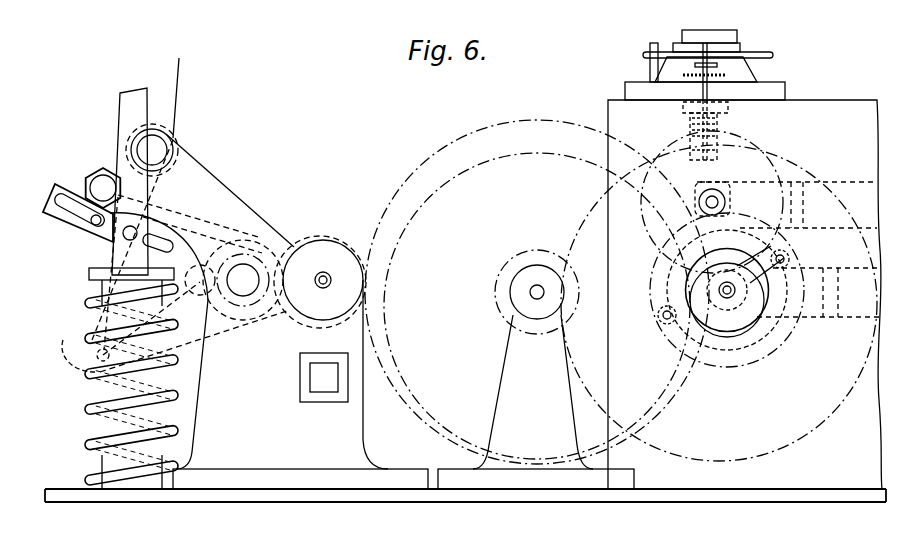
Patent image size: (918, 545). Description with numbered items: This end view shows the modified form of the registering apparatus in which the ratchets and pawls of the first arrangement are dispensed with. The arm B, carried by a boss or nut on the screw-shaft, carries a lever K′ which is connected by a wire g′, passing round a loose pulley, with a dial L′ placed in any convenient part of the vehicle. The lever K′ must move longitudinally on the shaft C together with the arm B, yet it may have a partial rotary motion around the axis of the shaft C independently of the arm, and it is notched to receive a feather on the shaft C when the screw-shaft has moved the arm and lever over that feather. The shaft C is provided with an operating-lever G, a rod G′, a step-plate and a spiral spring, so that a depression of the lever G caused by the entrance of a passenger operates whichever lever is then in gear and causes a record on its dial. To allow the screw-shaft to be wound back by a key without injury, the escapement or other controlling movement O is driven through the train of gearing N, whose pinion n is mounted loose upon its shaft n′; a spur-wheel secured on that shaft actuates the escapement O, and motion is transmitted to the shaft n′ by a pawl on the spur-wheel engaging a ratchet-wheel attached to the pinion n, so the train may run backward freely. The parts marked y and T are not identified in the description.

The shaft C is at (234, 280).
The arm B is at (66, 342).
The wire g′ is at (141, 199).
The rod G′ is at (139, 181).
The dial L′ is at (103, 188).
The operating-lever G is at (78, 216).
The lever K′ is at (131, 378).
The train of gearing N is at (537, 294).
The escapement or controlling movement O is at (705, 151).
The shaft n′ is at (726, 290).
The pinion n is at (727, 293).
The pawl screw y is at (777, 250).
The pawl T is at (748, 259).